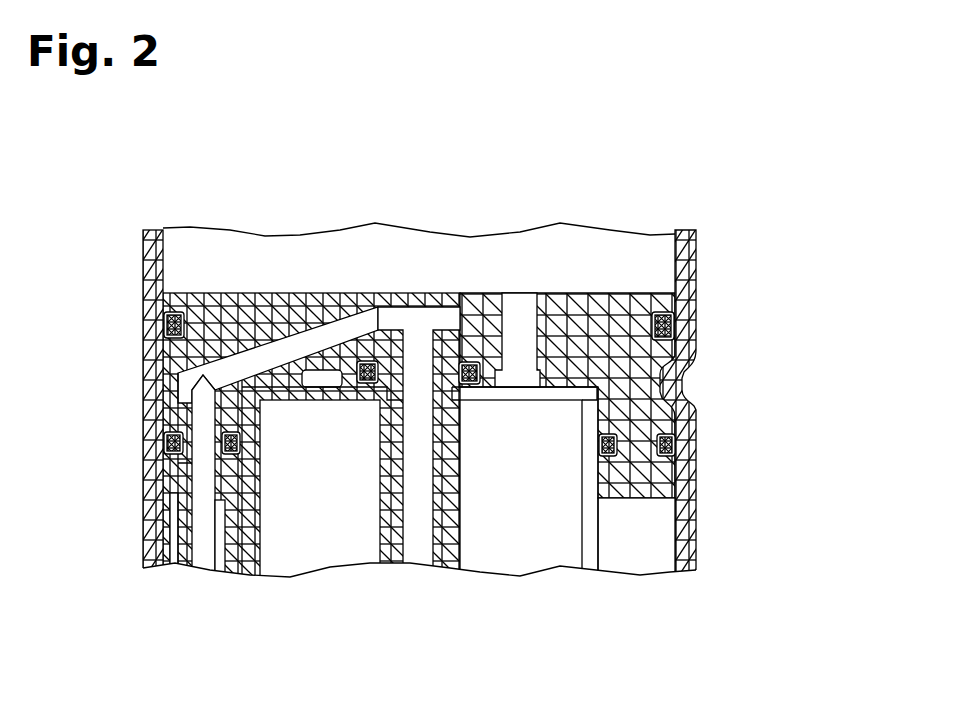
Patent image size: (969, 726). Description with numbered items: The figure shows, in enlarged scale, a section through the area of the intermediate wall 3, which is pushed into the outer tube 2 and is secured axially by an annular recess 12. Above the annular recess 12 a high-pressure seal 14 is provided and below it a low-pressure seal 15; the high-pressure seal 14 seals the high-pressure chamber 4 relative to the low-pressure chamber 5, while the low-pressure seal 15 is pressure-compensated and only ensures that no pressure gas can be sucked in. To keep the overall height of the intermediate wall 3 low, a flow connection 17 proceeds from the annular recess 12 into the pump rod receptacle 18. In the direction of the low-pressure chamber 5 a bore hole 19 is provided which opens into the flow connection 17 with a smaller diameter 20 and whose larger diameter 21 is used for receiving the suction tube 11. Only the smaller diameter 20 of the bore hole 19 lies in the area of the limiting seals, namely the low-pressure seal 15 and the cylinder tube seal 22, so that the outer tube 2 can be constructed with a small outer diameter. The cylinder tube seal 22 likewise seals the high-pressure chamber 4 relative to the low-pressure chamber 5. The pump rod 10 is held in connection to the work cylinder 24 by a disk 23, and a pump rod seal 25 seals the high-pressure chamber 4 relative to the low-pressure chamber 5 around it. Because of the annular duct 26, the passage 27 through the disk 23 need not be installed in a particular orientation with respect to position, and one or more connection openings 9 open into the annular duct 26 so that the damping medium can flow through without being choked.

The outer tube 2 is at (683, 250).
The intermediate wall 3 is at (618, 310).
The high-pressure chamber 4 is at (190, 262).
The low-pressure chamber 5 is at (657, 513).
The connection openings 9 is at (522, 317).
The pump rod 10 is at (447, 537).
The suction tube 11 is at (187, 550).
The annular recess 12 is at (178, 385).
The high-pressure seal 14 is at (165, 325).
The low-pressure seal 15 is at (168, 447).
The flow connection 17 is at (257, 355).
The pump rod receptacle 18 is at (443, 320).
The bore hole 19 is at (681, 381).
The smaller diameter 20 is at (197, 417).
The larger diameter 21 is at (180, 512).
The cylinder tube seal 22 is at (240, 447).
The disk 23 is at (573, 387).
The work cylinder 24 is at (593, 547).
The pump rod seal 25 is at (477, 363).
The annular duct 26 is at (327, 372).
The passage 27 is at (515, 393).